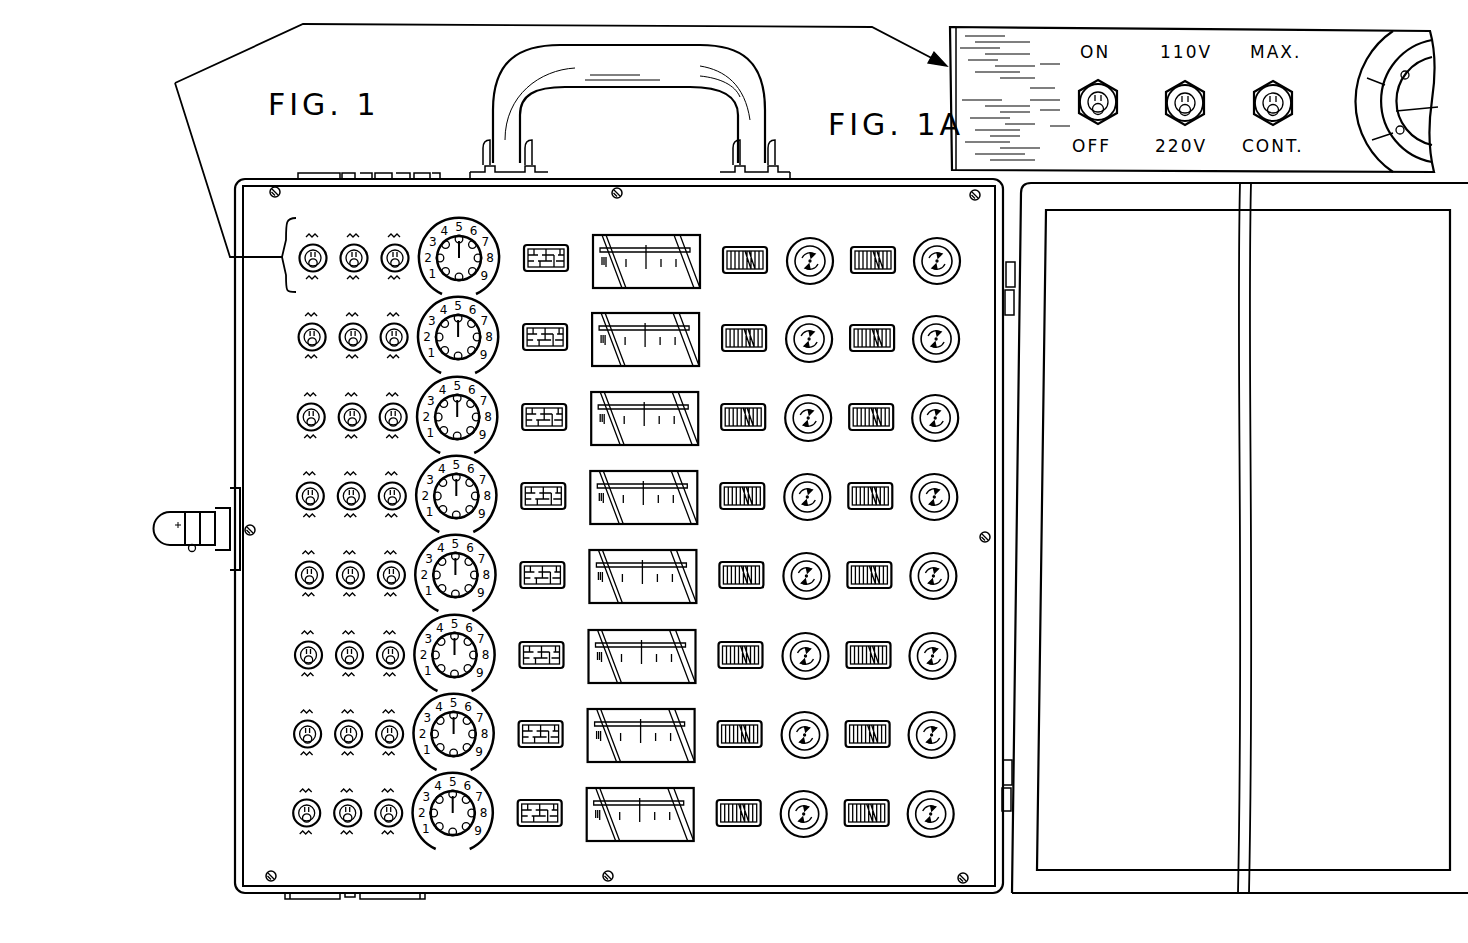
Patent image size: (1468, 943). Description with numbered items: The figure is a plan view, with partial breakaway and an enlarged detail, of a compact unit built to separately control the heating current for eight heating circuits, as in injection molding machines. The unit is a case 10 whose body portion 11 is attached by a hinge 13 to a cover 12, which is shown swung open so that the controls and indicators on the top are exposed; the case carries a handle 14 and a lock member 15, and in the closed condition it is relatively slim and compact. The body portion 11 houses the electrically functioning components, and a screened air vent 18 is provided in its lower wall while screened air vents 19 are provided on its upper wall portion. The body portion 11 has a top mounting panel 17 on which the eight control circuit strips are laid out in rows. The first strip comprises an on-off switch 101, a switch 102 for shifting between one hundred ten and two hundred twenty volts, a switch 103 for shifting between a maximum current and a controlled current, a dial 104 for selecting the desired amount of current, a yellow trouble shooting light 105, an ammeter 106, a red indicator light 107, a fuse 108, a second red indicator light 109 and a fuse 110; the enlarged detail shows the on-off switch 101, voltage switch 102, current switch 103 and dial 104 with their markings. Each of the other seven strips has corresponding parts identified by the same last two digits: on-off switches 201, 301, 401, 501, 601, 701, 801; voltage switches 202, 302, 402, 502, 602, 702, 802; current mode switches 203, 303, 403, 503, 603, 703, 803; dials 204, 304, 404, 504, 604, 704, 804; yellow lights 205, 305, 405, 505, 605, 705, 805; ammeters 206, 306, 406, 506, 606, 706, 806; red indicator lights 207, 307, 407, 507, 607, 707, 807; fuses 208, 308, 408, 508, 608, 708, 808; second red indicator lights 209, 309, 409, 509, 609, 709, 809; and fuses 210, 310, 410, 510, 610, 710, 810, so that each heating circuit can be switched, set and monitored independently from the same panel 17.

In FIG. 1, the case 10 is at (233, 354).
In FIG. 1, the body portion 11 is at (235, 402).
In FIG. 1A, the body portion 11 is at (953, 60).
In FIG. 1, the cover 12 is at (1255, 882).
In FIG. 1, the hinge 13 is at (1015, 283).
In FIG. 1, the handle 14 is at (648, 70).
In FIG. 1, the lock member 15 is at (215, 510).
In FIG. 1, the top mounting panel 17 is at (250, 691).
In FIG. 1A, the top mounting panel 17 is at (962, 148).
In FIG. 1, the screened air vent 18 is at (327, 898).
In FIG. 1, the screened air vents 19 is at (405, 177).
In FIG. 1, the on-off switch 101 is at (316, 245).
In FIG. 1A, the on-off switch 101 is at (1078, 100).
In FIG. 1, the voltage switch 102 is at (357, 245).
In FIG. 1A, the voltage switch 102 is at (1178, 98).
In FIG. 1, the current mode switch 103 is at (400, 245).
In FIG. 1A, the current mode switch 103 is at (1283, 100).
In FIG. 1, the dial 104 is at (493, 255).
In FIG. 1A, the dial 104 is at (1377, 123).
In FIG. 1, the yellow trouble shooting light 105 is at (550, 245).
In FIG. 1, the ammeter 106 is at (658, 236).
In FIG. 1, the red indicator light 107 is at (742, 247).
In FIG. 1, the fuse 108 is at (800, 240).
In FIG. 1, the second red indicator light 109 is at (868, 247).
In FIG. 1, the fuse 110 is at (928, 240).
In FIG. 1, the on-off switch 201 is at (312, 325).
In FIG. 1, the voltage switch 202 is at (350, 350).
In FIG. 1, the current mode switch 203 is at (393, 352).
In FIG. 1, the dial 204 is at (478, 312).
In FIG. 1, the yellow trouble shooting light 205 is at (545, 324).
In FIG. 1, the ammeter 206 is at (670, 314).
In FIG. 1, the red indicator light 207 is at (740, 328).
In FIG. 1, the fuse 208 is at (797, 320).
In FIG. 1, the second red indicator light 209 is at (866, 326).
In FIG. 1, the fuse 210 is at (928, 320).
In FIG. 1, the on-off switch 301 is at (312, 407).
In FIG. 1, the voltage switch 302 is at (352, 430).
In FIG. 1, the current mode switch 303 is at (393, 432).
In FIG. 1, the dial 304 is at (478, 402).
In FIG. 1, the yellow trouble shooting light 305 is at (548, 404).
In FIG. 1, the ammeter 306 is at (670, 393).
In FIG. 1, the red indicator light 307 is at (740, 408).
In FIG. 1, the fuse 308 is at (800, 399).
In FIG. 1, the second red indicator light 309 is at (868, 405).
In FIG. 1, the fuse 310 is at (930, 399).
In FIG. 1, the on-off switch 401 is at (310, 486).
In FIG. 1, the voltage switch 402 is at (350, 509).
In FIG. 1, the current mode switch 403 is at (392, 511).
In FIG. 1, the dial 404 is at (478, 481).
In FIG. 1, the yellow trouble shooting light 405 is at (546, 483).
In FIG. 1, the ammeter 406 is at (668, 471).
In FIG. 1, the red indicator light 407 is at (742, 483).
In FIG. 1, the fuse 408 is at (805, 478).
In FIG. 1, the second red indicator light 409 is at (873, 483).
In FIG. 1, the fuse 410 is at (935, 477).
In FIG. 1, the on-off switch 501 is at (310, 565).
In FIG. 1, the voltage switch 502 is at (350, 588).
In FIG. 1, the current mode switch 503 is at (392, 590).
In FIG. 1, the dial 504 is at (478, 562).
In FIG. 1, the yellow trouble shooting light 505 is at (546, 562).
In FIG. 1, the ammeter 506 is at (668, 551).
In FIG. 1, the red indicator light 507 is at (742, 562).
In FIG. 1, the fuse 508 is at (805, 558).
In FIG. 1, the second red indicator light 509 is at (873, 562).
In FIG. 1, the fuse 510 is at (938, 594).
In FIG. 1, the on-off switch 601 is at (310, 645).
In FIG. 1, the voltage switch 602 is at (350, 668).
In FIG. 1, the current mode switch 603 is at (392, 670).
In FIG. 1, the dial 604 is at (478, 641).
In FIG. 1, the yellow trouble shooting light 605 is at (546, 642).
In FIG. 1, the ammeter 606 is at (668, 630).
In FIG. 1, the red indicator light 607 is at (742, 642).
In FIG. 1, the fuse 608 is at (805, 638).
In FIG. 1, the second red indicator light 609 is at (873, 642).
In FIG. 1, the fuse 610 is at (936, 674).
In FIG. 1, the on-off switch 701 is at (310, 724).
In FIG. 1, the voltage switch 702 is at (350, 748).
In FIG. 1, the current mode switch 703 is at (392, 750).
In FIG. 1, the dial 704 is at (478, 720).
In FIG. 1, the yellow trouble shooting light 705 is at (546, 721).
In FIG. 1, the ammeter 706 is at (668, 709).
In FIG. 1, the red indicator light 707 is at (742, 721).
In FIG. 1, the fuse 708 is at (805, 716).
In FIG. 1, the second red indicator light 709 is at (873, 721).
In FIG. 1, the fuse 710 is at (936, 753).
In FIG. 1, the on-off switch 801 is at (310, 810).
In FIG. 1, the voltage switch 802 is at (352, 825).
In FIG. 1, the current mode switch 803 is at (396, 827).
In FIG. 1, the dial 804 is at (456, 822).
In FIG. 1, the yellow trouble shooting light 805 is at (552, 826).
In FIG. 1, the ammeter 806 is at (650, 840).
In FIG. 1, the red indicator light 807 is at (741, 828).
In FIG. 1, the fuse 808 is at (806, 836).
In FIG. 1, the second red indicator light 809 is at (872, 828).
In FIG. 1, the fuse 810 is at (939, 834).